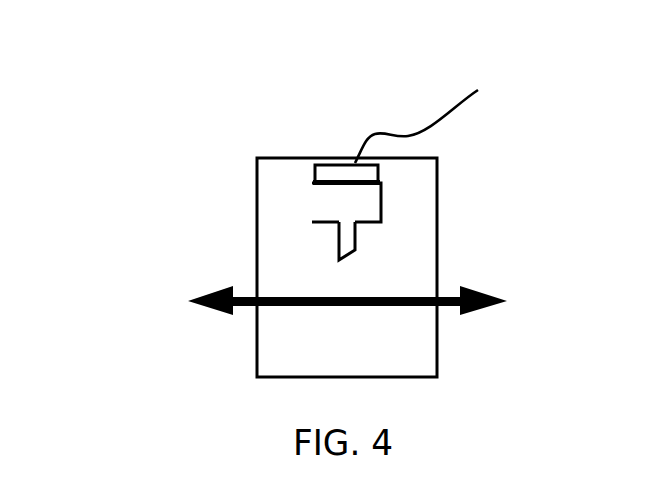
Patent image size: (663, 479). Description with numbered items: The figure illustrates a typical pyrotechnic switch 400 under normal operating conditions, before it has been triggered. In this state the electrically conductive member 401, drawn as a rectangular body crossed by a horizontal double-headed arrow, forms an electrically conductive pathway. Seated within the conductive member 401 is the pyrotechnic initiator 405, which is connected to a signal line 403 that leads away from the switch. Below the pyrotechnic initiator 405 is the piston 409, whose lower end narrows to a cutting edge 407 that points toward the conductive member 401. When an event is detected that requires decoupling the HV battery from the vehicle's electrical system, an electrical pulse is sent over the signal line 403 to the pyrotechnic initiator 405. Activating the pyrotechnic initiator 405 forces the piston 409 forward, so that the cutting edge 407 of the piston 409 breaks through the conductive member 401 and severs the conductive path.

The pyrotechnic switch 400 is at (152, 127).
The electrically conductive member 401 is at (445, 297).
The signal line 403 is at (433, 127).
The pyrotechnic initiator 405 is at (325, 173).
The cutting edge 407 is at (320, 266).
The piston 409 is at (330, 203).